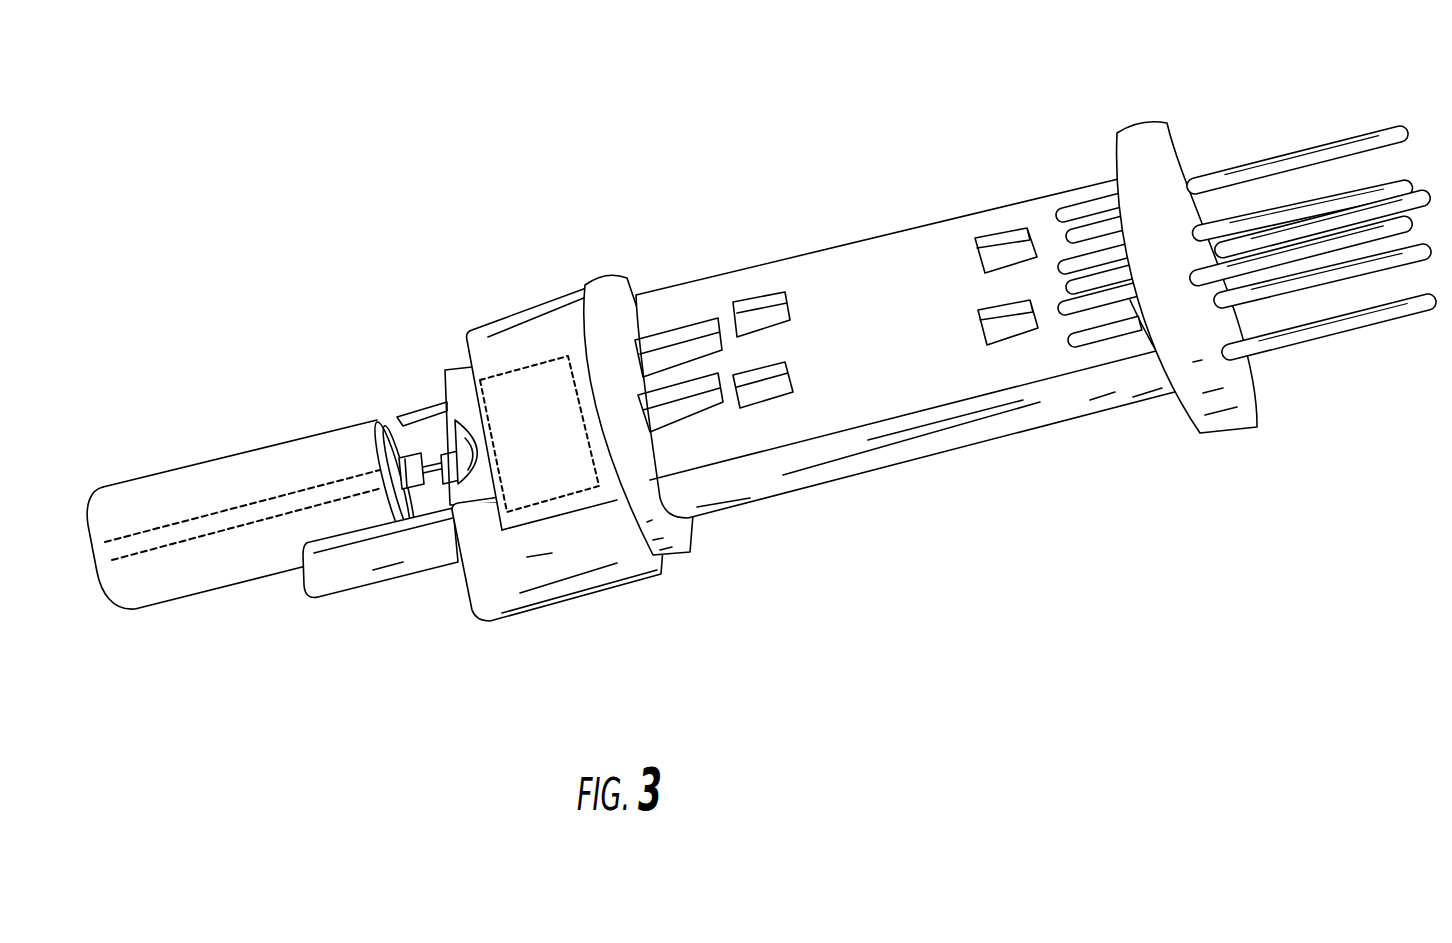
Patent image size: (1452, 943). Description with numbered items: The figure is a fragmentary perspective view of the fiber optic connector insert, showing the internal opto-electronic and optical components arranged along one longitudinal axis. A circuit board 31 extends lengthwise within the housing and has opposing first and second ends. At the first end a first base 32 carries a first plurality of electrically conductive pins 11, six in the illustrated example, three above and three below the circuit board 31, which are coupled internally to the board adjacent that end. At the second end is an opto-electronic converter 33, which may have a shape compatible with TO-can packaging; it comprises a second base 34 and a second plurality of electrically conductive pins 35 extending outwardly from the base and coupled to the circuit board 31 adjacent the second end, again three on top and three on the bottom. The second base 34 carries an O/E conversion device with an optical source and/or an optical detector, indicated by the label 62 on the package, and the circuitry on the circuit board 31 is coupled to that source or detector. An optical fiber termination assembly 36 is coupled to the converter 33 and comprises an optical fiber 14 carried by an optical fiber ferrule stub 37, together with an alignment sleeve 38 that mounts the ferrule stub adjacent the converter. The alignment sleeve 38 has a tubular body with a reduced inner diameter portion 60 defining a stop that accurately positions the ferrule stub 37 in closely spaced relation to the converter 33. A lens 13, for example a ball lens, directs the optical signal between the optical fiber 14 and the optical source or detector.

The first plurality of electrically conductive pins 11 is at (1246, 269).
The lens 13 is at (457, 447).
The optical fiber 14 is at (195, 513).
The circuit board 31 is at (912, 356).
The first base 32 is at (1148, 124).
The opto-electronic (O/E) converter 33 is at (547, 336).
The second base 34 is at (594, 283).
The second plurality of electrically conductive pins 35 is at (690, 328).
The optical fiber termination assembly 36 is at (422, 407).
The optical fiber ferrule stub 37 is at (253, 461).
The alignment sleeve 38 is at (422, 580).
The reduced inner diameter portion 60 is at (457, 598).
The optical source and/or detector label 62 is at (498, 368).